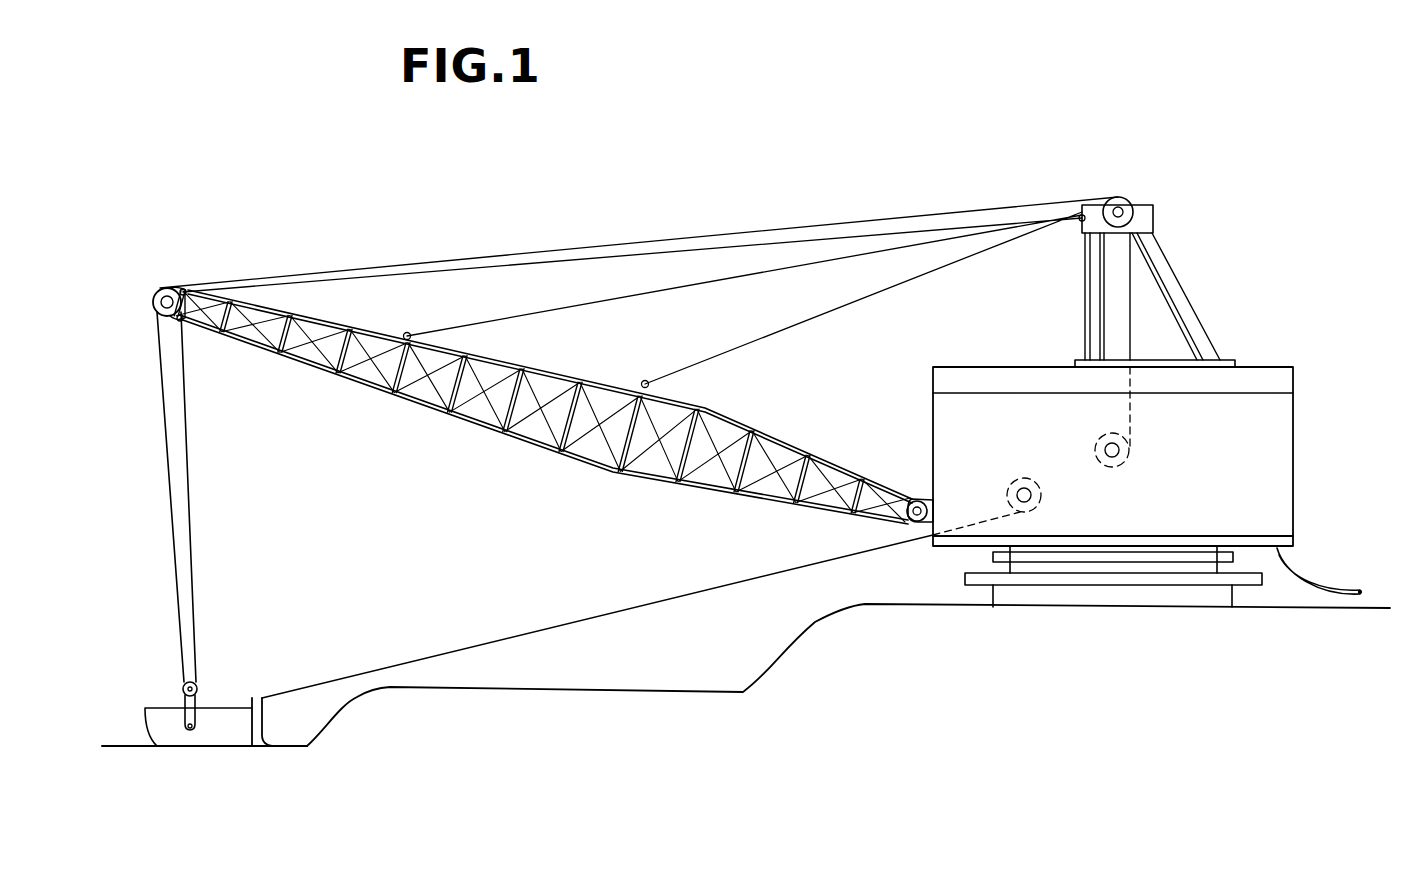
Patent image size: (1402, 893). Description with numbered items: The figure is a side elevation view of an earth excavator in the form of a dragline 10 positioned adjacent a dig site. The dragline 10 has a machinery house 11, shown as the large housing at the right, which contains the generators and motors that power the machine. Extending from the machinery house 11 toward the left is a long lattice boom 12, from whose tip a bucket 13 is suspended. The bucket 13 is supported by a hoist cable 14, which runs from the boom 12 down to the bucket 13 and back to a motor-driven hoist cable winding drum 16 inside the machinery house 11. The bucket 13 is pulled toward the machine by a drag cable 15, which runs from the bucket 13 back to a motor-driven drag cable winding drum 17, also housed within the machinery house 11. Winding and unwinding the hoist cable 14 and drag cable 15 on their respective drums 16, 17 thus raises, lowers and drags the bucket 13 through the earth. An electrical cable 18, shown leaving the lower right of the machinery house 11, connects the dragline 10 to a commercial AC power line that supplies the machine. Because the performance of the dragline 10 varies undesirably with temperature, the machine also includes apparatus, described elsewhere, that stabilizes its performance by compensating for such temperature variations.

The dragline 10 is at (1262, 250).
The machinery house 11 is at (1294, 372).
The boom 12 is at (533, 440).
The bucket 13 is at (158, 708).
The hoist cable 14 is at (172, 496).
The drag cable 15 is at (659, 604).
The hoist cable winding drum 16 is at (1100, 445).
The drag cable winding drum 17 is at (1020, 479).
The electrical cable 18 is at (1344, 590).